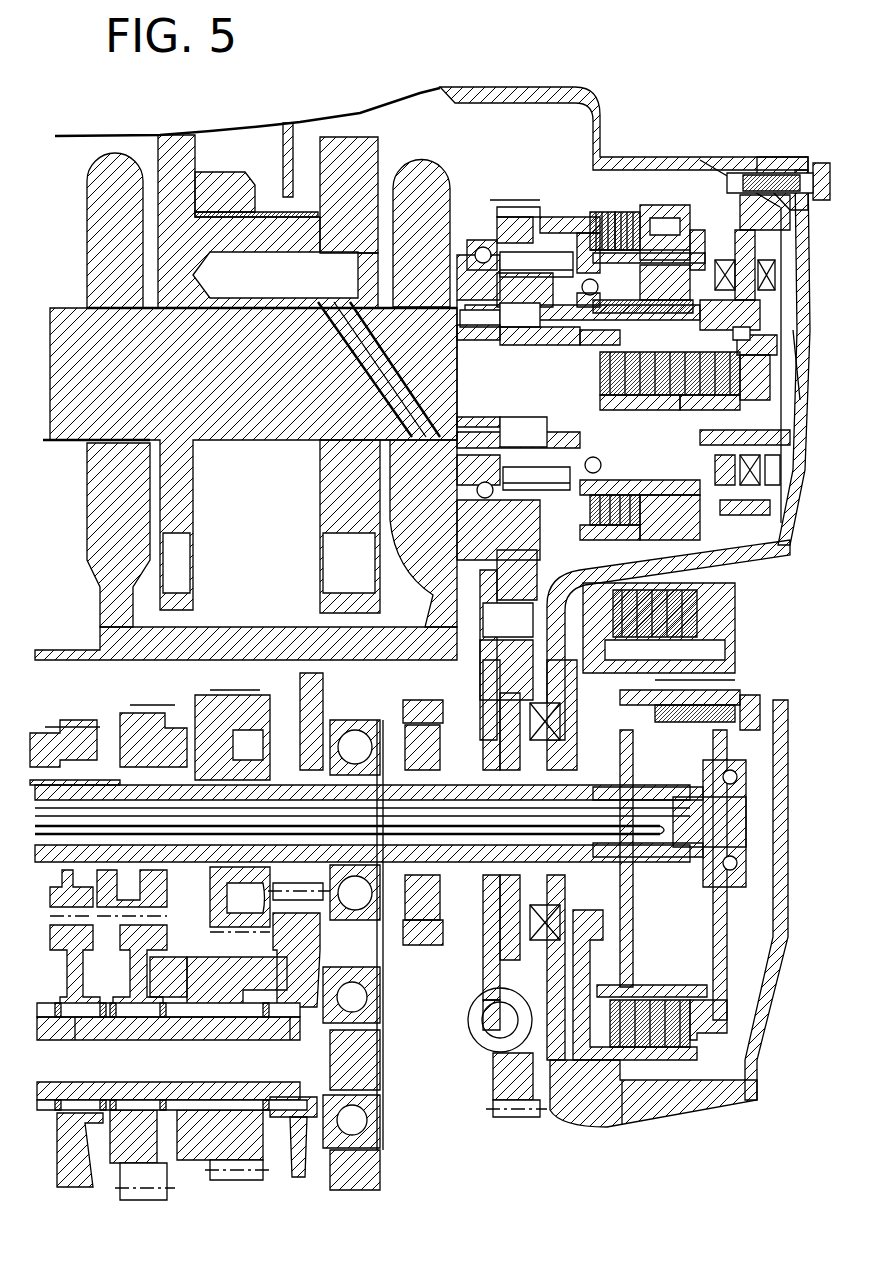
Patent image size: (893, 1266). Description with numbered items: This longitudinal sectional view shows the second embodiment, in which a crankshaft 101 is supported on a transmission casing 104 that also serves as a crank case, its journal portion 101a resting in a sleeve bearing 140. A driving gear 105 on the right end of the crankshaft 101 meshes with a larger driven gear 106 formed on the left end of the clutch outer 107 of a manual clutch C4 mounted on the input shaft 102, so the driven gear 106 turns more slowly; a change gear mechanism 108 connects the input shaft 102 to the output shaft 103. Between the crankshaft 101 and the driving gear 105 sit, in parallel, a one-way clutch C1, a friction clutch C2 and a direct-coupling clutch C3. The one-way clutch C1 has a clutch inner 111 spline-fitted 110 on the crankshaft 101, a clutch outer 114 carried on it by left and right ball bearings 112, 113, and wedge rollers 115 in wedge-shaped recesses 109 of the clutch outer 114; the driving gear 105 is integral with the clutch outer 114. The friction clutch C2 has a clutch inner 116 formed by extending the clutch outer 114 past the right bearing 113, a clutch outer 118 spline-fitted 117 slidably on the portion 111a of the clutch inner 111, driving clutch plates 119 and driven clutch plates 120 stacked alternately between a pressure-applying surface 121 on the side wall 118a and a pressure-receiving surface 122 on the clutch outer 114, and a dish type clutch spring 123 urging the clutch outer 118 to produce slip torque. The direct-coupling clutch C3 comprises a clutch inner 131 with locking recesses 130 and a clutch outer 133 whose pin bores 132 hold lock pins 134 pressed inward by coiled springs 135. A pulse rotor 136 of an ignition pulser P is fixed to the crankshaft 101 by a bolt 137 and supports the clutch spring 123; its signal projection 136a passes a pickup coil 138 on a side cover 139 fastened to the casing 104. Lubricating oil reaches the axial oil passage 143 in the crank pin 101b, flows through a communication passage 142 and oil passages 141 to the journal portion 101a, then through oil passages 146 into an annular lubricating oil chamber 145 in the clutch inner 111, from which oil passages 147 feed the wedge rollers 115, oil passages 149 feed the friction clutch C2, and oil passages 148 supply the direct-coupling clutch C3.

The crankshaft 101 is at (70, 312).
The journal portion 101a is at (392, 395).
The crank pin 101b is at (236, 245).
The input shaft 102 is at (140, 790).
The output shaft 103 is at (183, 1043).
The transmission casing 104 is at (70, 652).
The driving gear 105 is at (515, 206).
The driven gear 106 is at (515, 1124).
The clutch outer 107 is at (598, 1058).
The change gear mechanism 108 is at (48, 725).
The wedge-shaped recesses 109 is at (522, 258).
The spline fitting 110 is at (500, 425).
The clutch inner 111 is at (523, 333).
The extending portion of clutch inner 111a is at (600, 345).
The left ball bearing 112 is at (478, 240).
The right ball bearing 113 is at (568, 478).
The clutch outer 114 is at (582, 230).
The wedge rollers 115 is at (548, 310).
The clutch inner 116 is at (620, 322).
The spline fitting 117 is at (632, 397).
The clutch outer 118 is at (600, 543).
The side wall 118a is at (700, 260).
The driving clutch plates 119 is at (598, 210).
The driven clutch plates 120 is at (605, 500).
The pressure-applying surface 121 is at (640, 210).
The pressure-receiving surface 122 is at (590, 505).
The dish type clutch spring 123 is at (688, 308).
The locking recesses 130 is at (645, 265).
The clutch inner 131 is at (670, 335).
The pin bores 132 is at (718, 152).
The clutch outer 133 is at (745, 200).
The lock pins 134 is at (690, 232).
The coiled springs 135 is at (675, 205).
The pulse rotor 136 is at (760, 397).
The signal projection 136a is at (740, 310).
The bolt 137 is at (700, 397).
The pickup coil 138 is at (765, 350).
The side cover 139 is at (803, 345).
The sleeve bearing 140 is at (440, 318).
The oil passages 141 is at (395, 350).
The communication passage 142 is at (345, 338).
The axial oil passage 143 is at (315, 258).
The annular lubricating oil chamber 145 is at (512, 340).
The oil passages 146 is at (457, 320).
The oil passages 147 is at (497, 310).
The oil passages 148 is at (552, 425).
The oil passages 149 is at (556, 270).
The one-way clutch C1 is at (548, 215).
The friction clutch C2 is at (625, 200).
The direct-coupling clutch C3 is at (660, 200).
The manual clutch C4 is at (735, 635).
The ignition pulser P is at (785, 470).